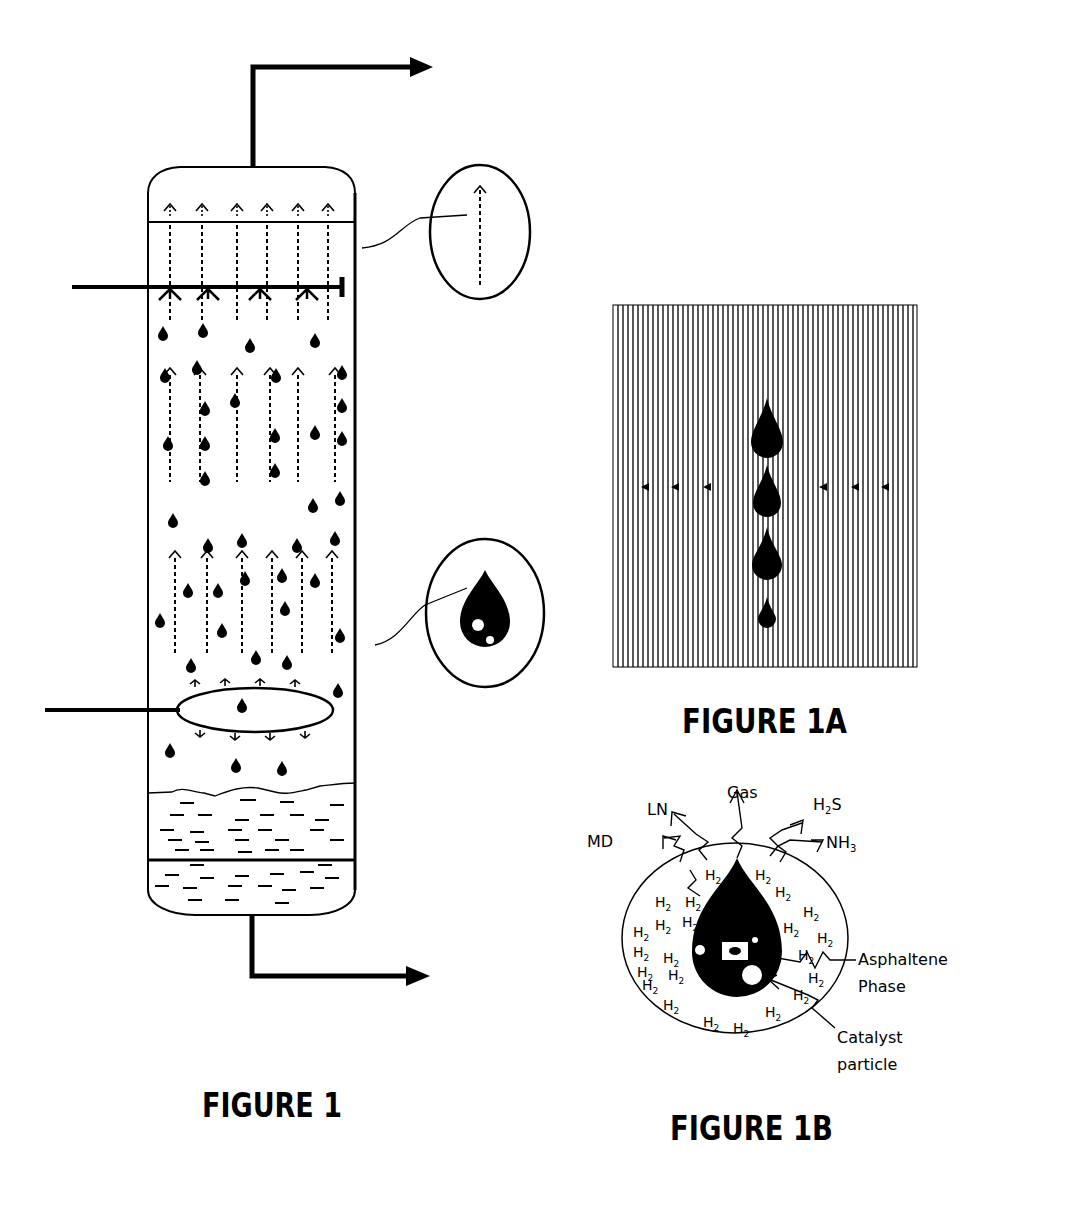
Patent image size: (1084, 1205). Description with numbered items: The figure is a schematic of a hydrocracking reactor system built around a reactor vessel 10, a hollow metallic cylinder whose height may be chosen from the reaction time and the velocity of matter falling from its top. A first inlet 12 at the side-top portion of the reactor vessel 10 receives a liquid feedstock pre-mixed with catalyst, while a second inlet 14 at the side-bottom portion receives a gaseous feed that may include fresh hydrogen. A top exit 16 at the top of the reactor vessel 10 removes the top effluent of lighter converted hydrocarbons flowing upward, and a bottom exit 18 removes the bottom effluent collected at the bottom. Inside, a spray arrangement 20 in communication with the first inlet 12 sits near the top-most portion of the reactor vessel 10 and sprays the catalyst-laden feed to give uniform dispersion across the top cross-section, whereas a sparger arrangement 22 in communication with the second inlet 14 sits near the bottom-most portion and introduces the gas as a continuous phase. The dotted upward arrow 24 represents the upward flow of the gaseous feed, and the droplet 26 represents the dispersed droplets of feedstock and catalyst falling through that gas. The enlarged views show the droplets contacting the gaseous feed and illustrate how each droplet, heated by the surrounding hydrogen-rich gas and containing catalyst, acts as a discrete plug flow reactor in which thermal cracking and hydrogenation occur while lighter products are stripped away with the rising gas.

The reactor vessel 10 is at (344, 544).
The first inlet 12 is at (146, 300).
The second inlet 14 is at (126, 723).
The top exit 16 is at (297, 96).
The bottom exit 18 is at (404, 989).
The spray arrangement 20 is at (386, 290).
The sparger arrangement 22 is at (376, 710).
The arrow 24 is at (542, 292).
The droplet 26 is at (504, 534).